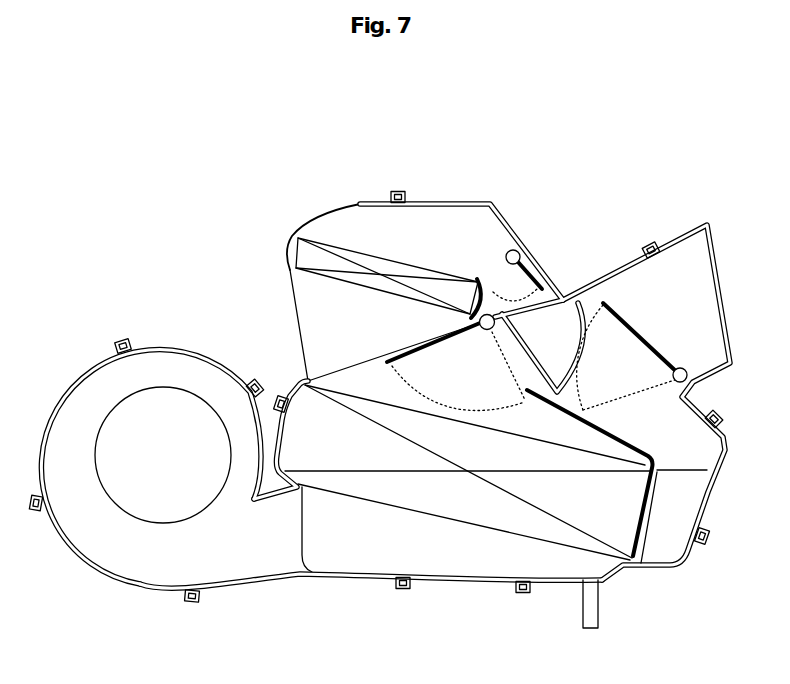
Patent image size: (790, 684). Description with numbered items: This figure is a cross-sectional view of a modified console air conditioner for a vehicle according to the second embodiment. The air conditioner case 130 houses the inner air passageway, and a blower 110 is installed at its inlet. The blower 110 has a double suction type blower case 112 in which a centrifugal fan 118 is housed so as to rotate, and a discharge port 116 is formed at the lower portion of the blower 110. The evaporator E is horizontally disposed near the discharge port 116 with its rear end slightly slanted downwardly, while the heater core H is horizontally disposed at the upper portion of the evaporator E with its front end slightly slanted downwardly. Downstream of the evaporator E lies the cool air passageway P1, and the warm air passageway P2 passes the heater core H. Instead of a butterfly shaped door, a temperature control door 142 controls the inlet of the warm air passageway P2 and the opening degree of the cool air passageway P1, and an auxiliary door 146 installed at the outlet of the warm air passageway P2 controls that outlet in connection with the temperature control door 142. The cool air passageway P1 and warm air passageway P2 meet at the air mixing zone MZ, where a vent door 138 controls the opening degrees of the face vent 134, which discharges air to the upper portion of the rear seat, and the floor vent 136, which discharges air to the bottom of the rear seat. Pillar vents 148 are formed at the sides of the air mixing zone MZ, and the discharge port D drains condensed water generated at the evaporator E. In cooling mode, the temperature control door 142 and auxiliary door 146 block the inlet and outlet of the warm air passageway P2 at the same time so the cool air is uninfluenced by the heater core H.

The blower 110 is at (89, 351).
The blower case 112 is at (95, 570).
The discharge port 116 is at (277, 552).
The centrifugal fan 118 is at (155, 517).
The air conditioner case 130 is at (325, 213).
The face vent 134 is at (712, 296).
The floor vent 136 is at (670, 548).
The vent door 138 is at (636, 327).
The temperature control door 142 is at (397, 363).
The auxiliary door 146 is at (537, 258).
The pillar vent 148 is at (548, 320).
The heater core H is at (300, 253).
The evaporator E is at (538, 525).
The discharge port D is at (597, 607).
The cool air passageway P1 is at (494, 376).
The warm air passageway P2 is at (386, 248).
The air mixing zone MZ is at (621, 368).